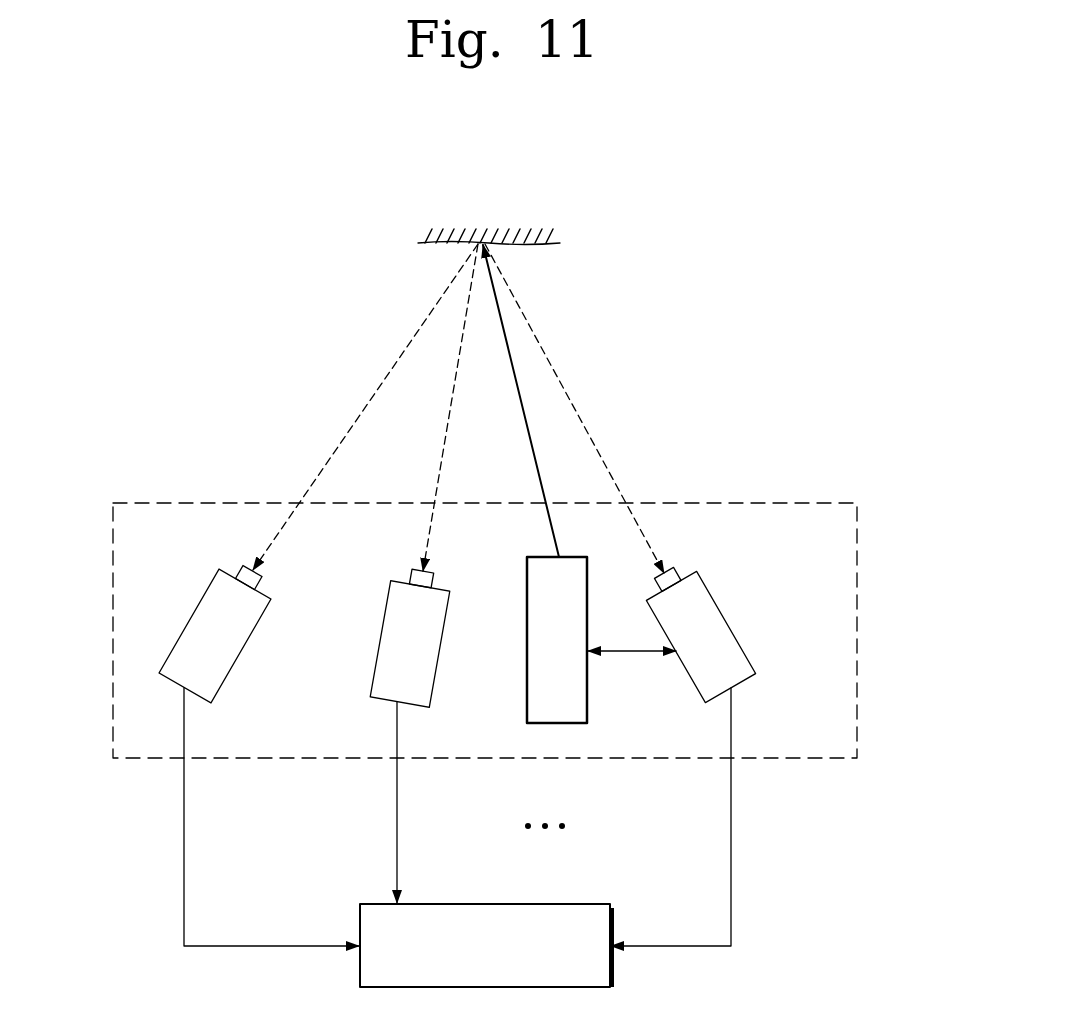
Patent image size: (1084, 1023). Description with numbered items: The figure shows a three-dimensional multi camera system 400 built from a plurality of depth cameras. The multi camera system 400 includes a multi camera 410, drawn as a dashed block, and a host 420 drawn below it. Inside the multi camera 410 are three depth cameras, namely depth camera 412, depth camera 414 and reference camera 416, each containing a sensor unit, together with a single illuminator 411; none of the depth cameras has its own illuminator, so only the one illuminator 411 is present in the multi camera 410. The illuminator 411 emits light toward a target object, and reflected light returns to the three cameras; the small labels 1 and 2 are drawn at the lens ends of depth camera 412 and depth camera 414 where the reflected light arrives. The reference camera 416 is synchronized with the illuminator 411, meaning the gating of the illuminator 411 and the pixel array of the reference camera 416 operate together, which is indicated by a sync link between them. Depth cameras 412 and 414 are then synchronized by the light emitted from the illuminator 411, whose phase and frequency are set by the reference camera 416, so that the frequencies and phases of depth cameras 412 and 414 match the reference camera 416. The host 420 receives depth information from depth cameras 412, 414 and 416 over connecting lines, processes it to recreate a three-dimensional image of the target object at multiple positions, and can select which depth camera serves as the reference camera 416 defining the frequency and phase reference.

The multi camera system 400 is at (810, 168).
The multi camera 410 is at (742, 503).
The illuminator 411 is at (587, 712).
The depth camera 412 is at (228, 675).
The depth camera 414 is at (434, 670).
The reference camera 416 is at (740, 683).
The host 420 is at (576, 904).
The first depth camera lens 1 is at (232, 560).
The second depth camera lens 2 is at (417, 565).